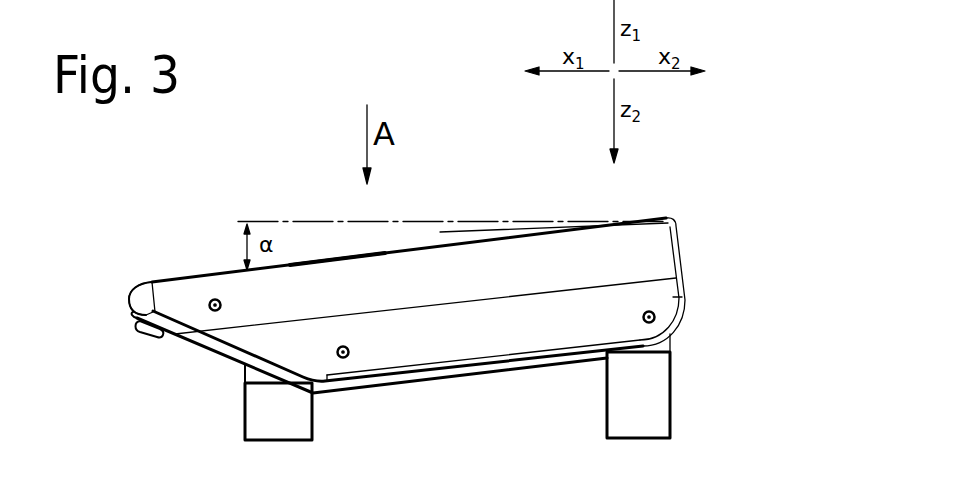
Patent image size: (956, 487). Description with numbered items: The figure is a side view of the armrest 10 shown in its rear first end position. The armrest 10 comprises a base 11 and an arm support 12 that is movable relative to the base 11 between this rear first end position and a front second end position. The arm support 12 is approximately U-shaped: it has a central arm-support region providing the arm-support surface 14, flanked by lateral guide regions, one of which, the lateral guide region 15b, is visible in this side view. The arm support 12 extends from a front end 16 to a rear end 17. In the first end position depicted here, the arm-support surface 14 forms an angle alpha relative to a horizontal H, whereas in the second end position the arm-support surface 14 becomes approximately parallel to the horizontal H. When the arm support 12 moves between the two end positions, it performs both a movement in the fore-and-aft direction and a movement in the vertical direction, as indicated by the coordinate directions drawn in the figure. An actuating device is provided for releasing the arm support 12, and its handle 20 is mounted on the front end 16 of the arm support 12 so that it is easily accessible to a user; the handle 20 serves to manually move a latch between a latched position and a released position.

The armrest 10 is at (738, 240).
The base 11 is at (627, 416).
The arm support 12 is at (198, 289).
The arm-support surface 14 is at (473, 242).
The lateral guide region 15b is at (278, 341).
The front end 16 is at (118, 289).
The rear end 17 is at (664, 198).
The handle 20 is at (146, 336).
The horizontal H is at (297, 220).